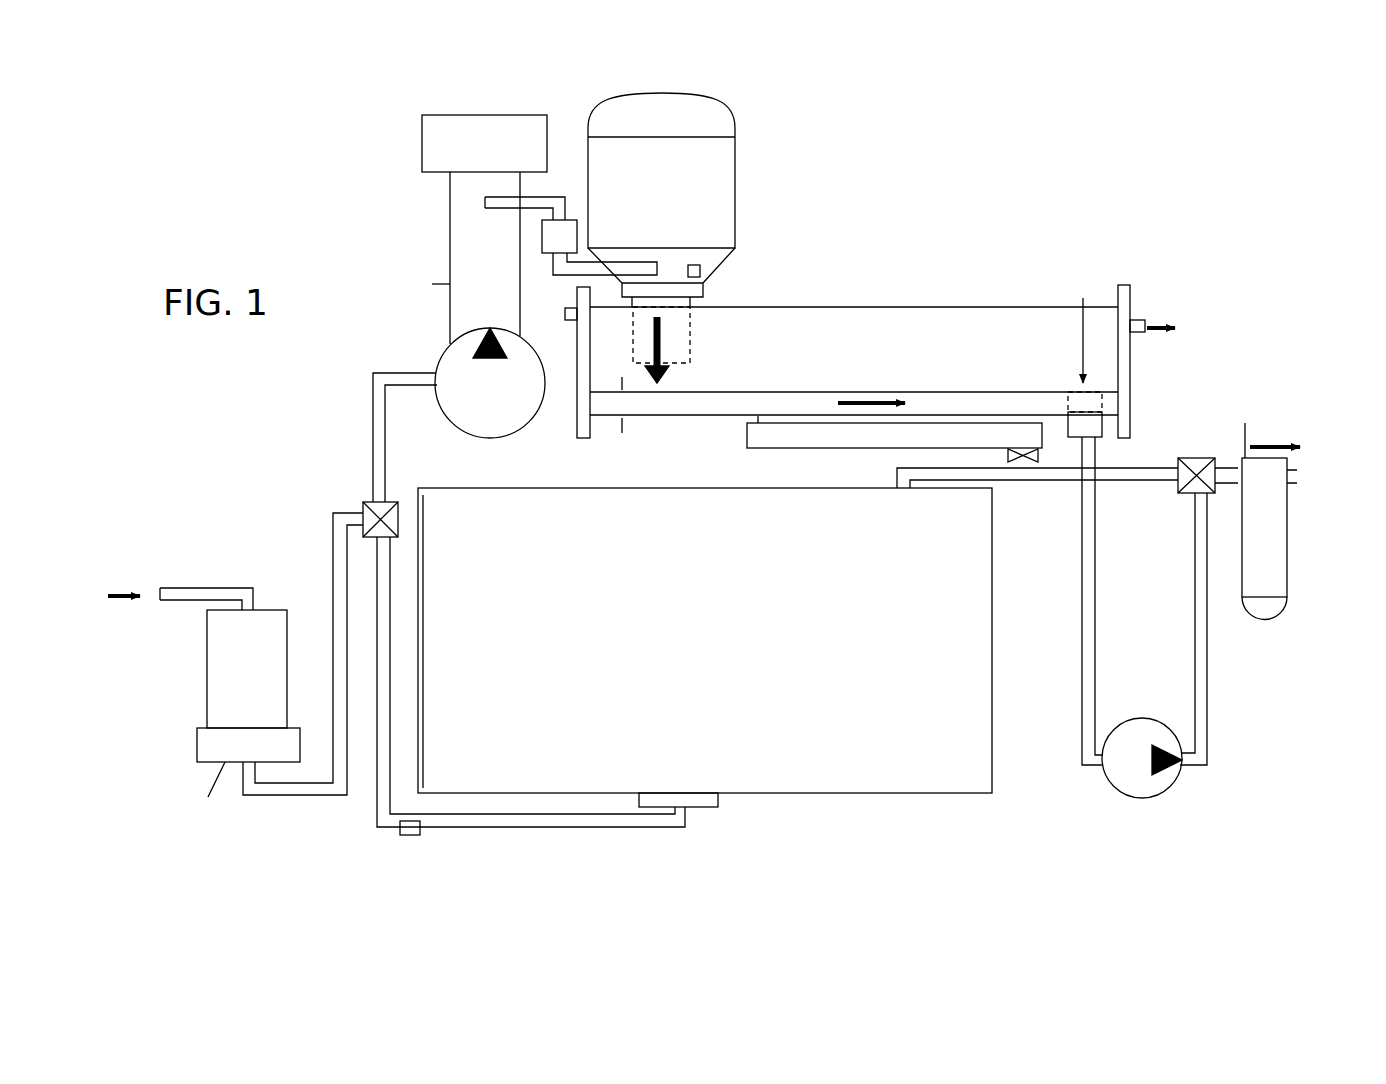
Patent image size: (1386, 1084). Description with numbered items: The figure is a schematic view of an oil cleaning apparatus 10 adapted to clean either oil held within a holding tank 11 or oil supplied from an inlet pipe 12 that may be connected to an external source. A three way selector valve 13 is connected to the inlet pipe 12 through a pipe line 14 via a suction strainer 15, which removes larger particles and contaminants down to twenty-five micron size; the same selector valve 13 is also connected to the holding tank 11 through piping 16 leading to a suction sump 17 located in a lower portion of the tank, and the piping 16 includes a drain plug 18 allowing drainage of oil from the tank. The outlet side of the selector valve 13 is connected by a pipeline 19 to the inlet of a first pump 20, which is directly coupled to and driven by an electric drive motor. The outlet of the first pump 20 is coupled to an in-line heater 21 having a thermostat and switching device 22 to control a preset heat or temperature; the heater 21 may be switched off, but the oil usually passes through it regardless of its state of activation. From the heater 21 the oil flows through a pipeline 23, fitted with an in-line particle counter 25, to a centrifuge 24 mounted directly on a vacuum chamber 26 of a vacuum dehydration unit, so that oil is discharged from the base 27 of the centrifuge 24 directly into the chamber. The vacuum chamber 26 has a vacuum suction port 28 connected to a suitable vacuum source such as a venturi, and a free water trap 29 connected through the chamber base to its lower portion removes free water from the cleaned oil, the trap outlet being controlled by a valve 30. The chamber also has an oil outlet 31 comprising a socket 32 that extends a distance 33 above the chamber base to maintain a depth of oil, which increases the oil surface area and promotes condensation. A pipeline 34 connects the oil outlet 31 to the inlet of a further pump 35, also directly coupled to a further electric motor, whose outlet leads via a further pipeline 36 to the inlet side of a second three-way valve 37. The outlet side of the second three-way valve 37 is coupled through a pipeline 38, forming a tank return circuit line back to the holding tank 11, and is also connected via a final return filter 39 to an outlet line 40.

The oil cleaning apparatus 10 is at (1050, 152).
The holding tank 11 is at (884, 766).
The inlet pipe 12 is at (185, 590).
The three way selector valve 13 is at (363, 508).
The pipe line 14 is at (330, 550).
The suction strainer 15 is at (217, 672).
The piping 16 is at (375, 797).
The suction sump 17 is at (718, 807).
The drain plug 18 is at (400, 833).
The pipeline 19 is at (373, 433).
The first pump 20 is at (442, 355).
The in-line heater 21 is at (452, 221).
The thermostat and switching device 22 is at (428, 152).
The pipeline 23 is at (548, 200).
The centrifuge 24 is at (740, 170).
The in-line particle counter 25 is at (557, 238).
The vacuum chamber 26 is at (985, 320).
The base of the centrifuge 27 is at (692, 330).
The vacuum suction port 28 is at (1142, 318).
The free water trap 29 is at (747, 442).
The valve 30 is at (1040, 459).
The oil outlet 31 is at (1118, 420).
The socket 32 is at (1080, 324).
The distance 33 is at (624, 416).
The pipeline 34 is at (1083, 690).
The further pump 35 is at (1130, 785).
The further pipeline 36 is at (1206, 700).
The second three-way valve 37 is at (1205, 456).
The pipeline 38 is at (1062, 478).
The final return filter 39 is at (1266, 617).
The outlet line 40 is at (1297, 483).